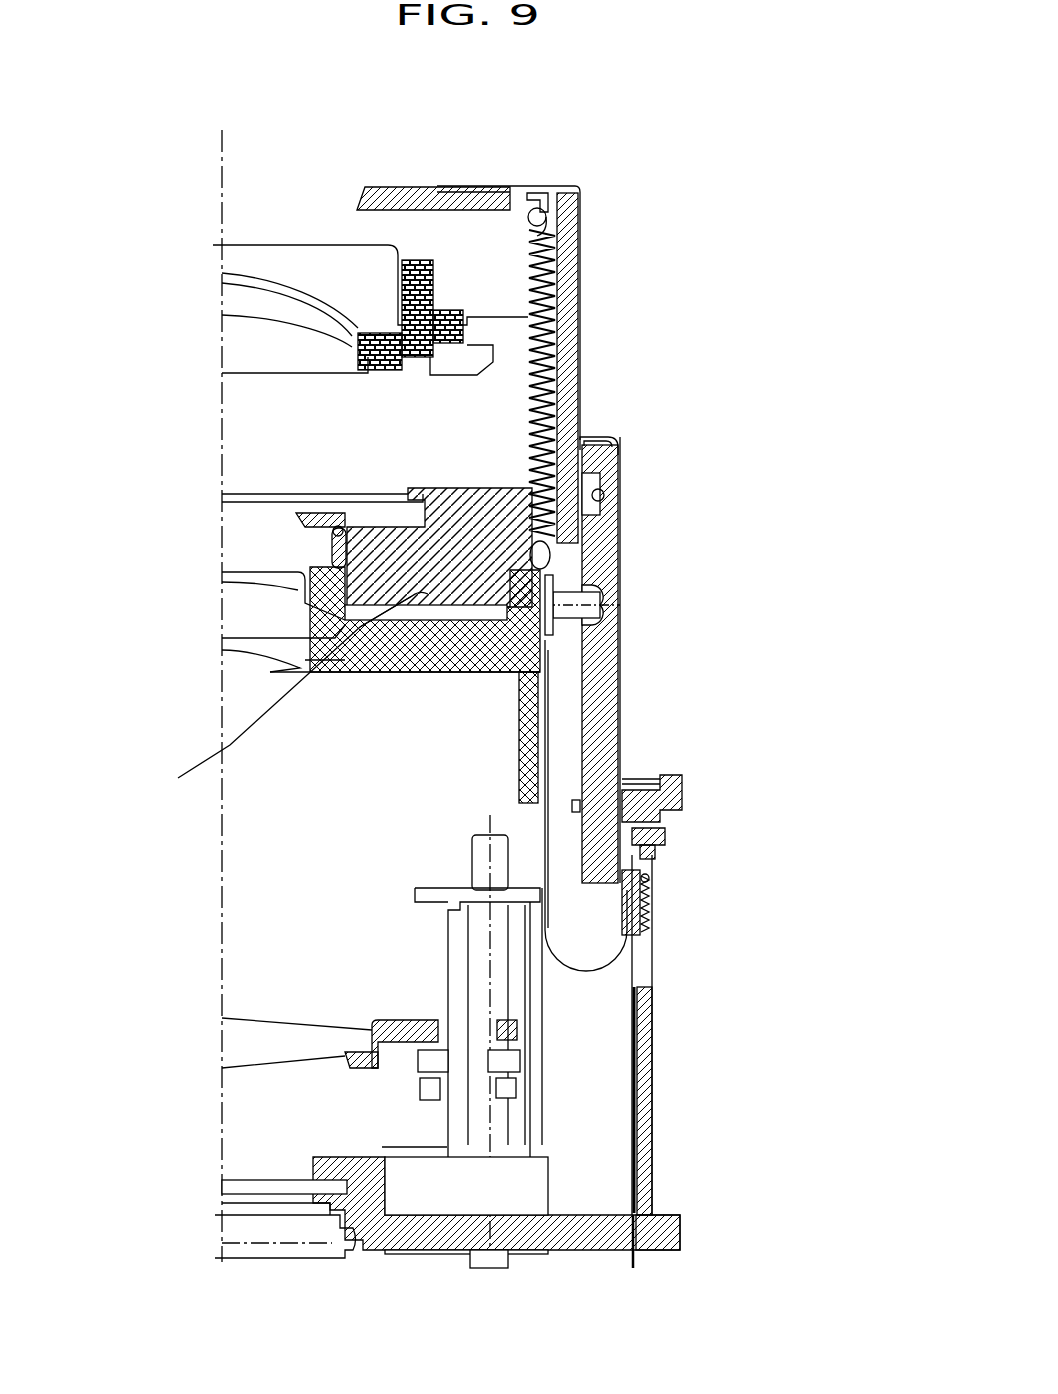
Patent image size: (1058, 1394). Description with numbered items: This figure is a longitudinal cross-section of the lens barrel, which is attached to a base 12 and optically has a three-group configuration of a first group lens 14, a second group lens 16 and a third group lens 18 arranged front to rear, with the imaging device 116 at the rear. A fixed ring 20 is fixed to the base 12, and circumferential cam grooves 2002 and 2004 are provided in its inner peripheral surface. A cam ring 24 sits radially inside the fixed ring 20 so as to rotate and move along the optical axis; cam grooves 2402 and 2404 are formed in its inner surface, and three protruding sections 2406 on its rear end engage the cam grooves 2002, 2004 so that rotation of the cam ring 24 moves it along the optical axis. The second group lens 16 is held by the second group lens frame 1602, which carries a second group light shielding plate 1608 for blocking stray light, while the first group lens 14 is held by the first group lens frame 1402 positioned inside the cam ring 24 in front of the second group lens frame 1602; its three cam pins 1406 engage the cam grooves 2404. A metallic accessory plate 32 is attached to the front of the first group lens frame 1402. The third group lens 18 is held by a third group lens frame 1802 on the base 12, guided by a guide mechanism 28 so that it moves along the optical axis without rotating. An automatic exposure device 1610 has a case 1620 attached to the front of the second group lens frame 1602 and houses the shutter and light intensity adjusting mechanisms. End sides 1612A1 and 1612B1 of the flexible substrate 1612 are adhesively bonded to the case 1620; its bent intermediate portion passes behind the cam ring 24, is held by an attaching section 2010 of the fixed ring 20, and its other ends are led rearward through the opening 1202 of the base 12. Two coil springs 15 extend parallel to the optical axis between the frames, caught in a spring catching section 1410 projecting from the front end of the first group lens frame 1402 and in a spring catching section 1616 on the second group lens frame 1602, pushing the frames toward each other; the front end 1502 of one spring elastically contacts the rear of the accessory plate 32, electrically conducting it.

The base 12 is at (583, 1255).
The first group lens 14 is at (280, 244).
The coil springs 15 is at (548, 292).
The second group lens 16 is at (246, 654).
The third group lens 18 is at (243, 1018).
The fixed ring 20 is at (657, 1080).
The cam ring 24 is at (626, 667).
The guide mechanism 28 is at (428, 930).
The accessory plate 32 is at (500, 186).
The imaging device 116 is at (268, 1260).
The opening 1202 is at (640, 1256).
The first group lens frame 1402 is at (583, 368).
The cam pins 1406 is at (600, 497).
The spring catching section 1410 is at (554, 220).
The front end 1502 is at (543, 197).
The second group lens frame 1602 is at (460, 674).
The second group light shielding plate 1608 is at (567, 592).
The automatic exposure device 1610 is at (475, 495).
The flexible substrate 1612 is at (552, 728).
The end side 1612A1 is at (160, 823).
The end side 1612B1 is at (242, 706).
The spring catching section 1616 is at (545, 600).
The case 1620 is at (338, 528).
The third group lens frame 1802 is at (400, 1018).
The cam groove 2002 is at (655, 845).
The cam groove 2004 is at (647, 852).
The attaching section 2010 is at (648, 913).
The cam groove 2402 is at (597, 472).
The cam groove 2404 is at (603, 606).
The protruding sections 2406 is at (650, 823).